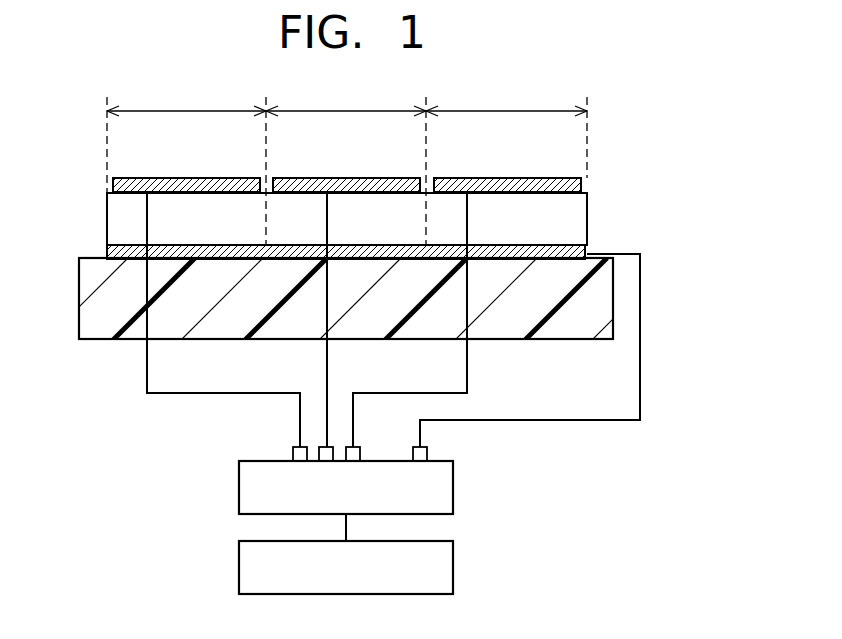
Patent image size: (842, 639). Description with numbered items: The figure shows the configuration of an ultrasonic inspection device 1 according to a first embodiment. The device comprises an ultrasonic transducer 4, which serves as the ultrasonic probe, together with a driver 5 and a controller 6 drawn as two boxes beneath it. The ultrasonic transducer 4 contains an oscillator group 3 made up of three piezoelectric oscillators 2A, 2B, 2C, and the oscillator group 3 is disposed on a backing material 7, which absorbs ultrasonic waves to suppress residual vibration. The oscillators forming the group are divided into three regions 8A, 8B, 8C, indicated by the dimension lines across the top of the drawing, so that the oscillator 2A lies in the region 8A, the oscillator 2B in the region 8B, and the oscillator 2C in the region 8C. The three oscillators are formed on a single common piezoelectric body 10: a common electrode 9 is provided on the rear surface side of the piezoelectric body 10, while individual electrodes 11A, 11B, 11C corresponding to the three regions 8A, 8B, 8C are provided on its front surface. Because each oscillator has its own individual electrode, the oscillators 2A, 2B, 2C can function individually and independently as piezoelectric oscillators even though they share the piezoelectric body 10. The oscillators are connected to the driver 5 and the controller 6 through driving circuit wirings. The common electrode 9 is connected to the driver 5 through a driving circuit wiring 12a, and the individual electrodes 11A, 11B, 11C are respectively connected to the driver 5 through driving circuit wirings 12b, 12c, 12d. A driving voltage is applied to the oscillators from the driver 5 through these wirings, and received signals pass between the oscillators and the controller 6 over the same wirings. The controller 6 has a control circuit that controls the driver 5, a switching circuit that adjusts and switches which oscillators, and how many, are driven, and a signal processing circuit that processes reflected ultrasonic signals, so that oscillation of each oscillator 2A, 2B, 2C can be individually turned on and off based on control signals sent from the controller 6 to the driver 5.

The ultrasonic inspection device 1 is at (614, 110).
The oscillator 2A is at (188, 213).
The oscillator 2B is at (347, 213).
The oscillator 2C is at (507, 213).
The oscillator group 3 is at (601, 181).
The ultrasonic transducer 4 is at (686, 177).
The driver 5 is at (453, 488).
The controller 6 is at (453, 567).
The backing material 7 is at (79, 298).
The region 8A is at (186, 137).
The region 8B is at (346, 163).
The region 8C is at (506, 163).
The common electrode 9 is at (572, 247).
The piezoelectric body 10 is at (120, 220).
The individual electrode 11A is at (150, 178).
The individual electrode 11B is at (311, 178).
The individual electrode 11C is at (469, 178).
The driving circuit wiring 12a is at (641, 401).
The driving circuit wiring 12b is at (147, 374).
The driving circuit wiring 12c is at (328, 374).
The driving circuit wiring 12d is at (468, 374).